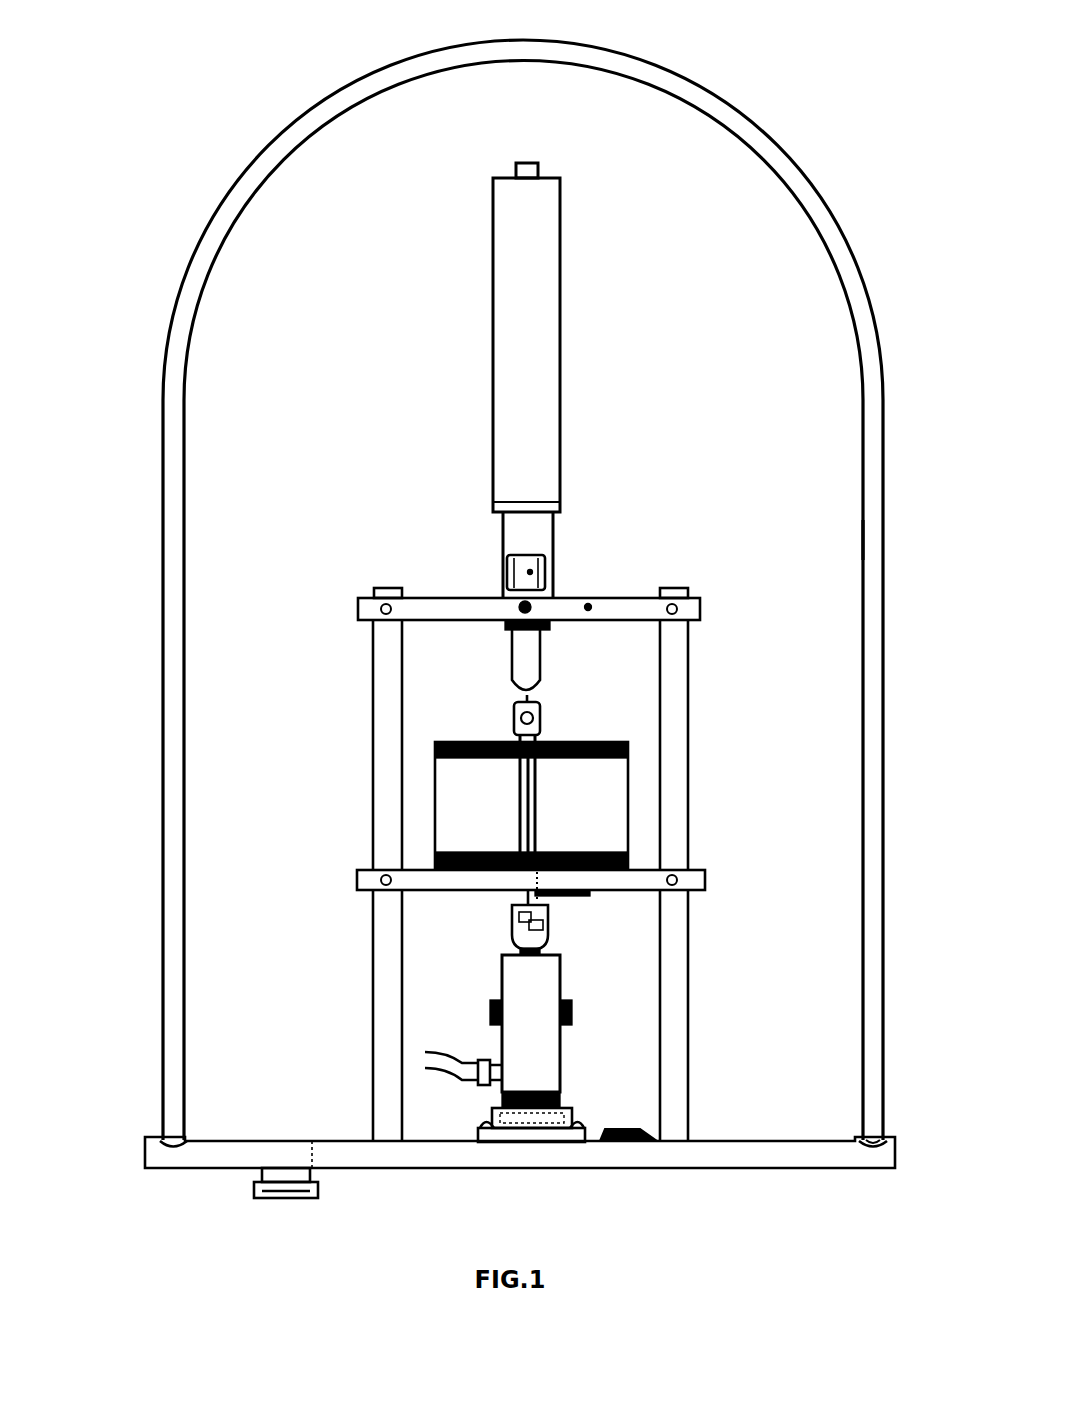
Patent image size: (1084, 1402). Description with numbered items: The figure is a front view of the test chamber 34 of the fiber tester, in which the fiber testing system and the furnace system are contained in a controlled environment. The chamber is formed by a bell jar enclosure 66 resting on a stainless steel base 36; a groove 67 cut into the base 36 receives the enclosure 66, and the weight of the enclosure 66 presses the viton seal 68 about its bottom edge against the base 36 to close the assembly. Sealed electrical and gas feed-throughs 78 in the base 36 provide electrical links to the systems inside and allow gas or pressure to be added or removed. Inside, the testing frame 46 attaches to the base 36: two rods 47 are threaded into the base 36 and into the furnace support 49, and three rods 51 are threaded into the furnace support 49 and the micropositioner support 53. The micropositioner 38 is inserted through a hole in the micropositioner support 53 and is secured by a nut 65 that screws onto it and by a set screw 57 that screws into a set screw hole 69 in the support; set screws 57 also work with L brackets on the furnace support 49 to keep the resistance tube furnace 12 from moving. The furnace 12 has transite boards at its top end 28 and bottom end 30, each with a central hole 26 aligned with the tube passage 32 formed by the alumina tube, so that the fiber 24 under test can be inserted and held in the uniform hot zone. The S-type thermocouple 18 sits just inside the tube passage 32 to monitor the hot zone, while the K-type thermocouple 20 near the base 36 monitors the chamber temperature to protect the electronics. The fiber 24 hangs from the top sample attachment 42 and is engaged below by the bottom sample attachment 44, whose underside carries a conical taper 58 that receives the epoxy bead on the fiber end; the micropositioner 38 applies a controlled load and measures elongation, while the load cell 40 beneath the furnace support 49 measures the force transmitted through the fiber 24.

The resistance tube furnace 12 is at (430, 785).
The S-type thermocouple 18 is at (525, 735).
The K-type thermocouple 20 is at (650, 1130).
The fiber 24 is at (545, 787).
The hole 26 is at (470, 742).
The top end 28 is at (607, 742).
The bottom end 30 is at (628, 858).
The tube passage 32 is at (545, 825).
The test chamber 34 is at (835, 818).
The base 36 is at (812, 1160).
The micropositioner 38 is at (537, 273).
The load cell 40 is at (527, 1038).
The top sample attachment 42 is at (520, 693).
The bottom sample attachment 44 is at (505, 911).
The testing frame 46 is at (744, 584).
The rods 47 is at (386, 947).
The furnace support 49 is at (695, 885).
The rods 51 is at (388, 690).
The micropositioner support 53 is at (590, 605).
The set screw 57 is at (522, 606).
The conical taper 58 is at (540, 905).
The nut 65 is at (545, 624).
The enclosure 66 is at (872, 548).
The groove 67 is at (170, 1150).
The seal 68 is at (872, 1135).
The set screw hole 69 is at (548, 552).
The sealed electrical and gas feed-throughs 78 is at (320, 1198).